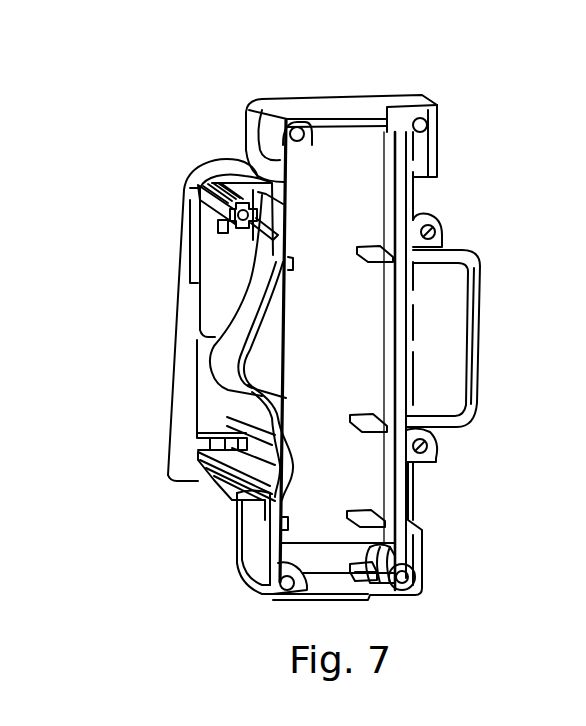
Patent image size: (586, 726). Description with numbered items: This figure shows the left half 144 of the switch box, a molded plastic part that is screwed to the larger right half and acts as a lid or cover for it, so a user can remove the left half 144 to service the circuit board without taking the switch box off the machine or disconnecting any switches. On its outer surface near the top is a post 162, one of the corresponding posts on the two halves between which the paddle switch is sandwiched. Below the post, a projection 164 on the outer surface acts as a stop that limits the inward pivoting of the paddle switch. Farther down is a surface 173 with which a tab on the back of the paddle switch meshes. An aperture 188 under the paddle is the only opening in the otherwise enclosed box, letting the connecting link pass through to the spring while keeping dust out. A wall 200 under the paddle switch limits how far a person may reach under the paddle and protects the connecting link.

The left half 144 is at (342, 110).
The post 162 is at (212, 195).
The projection 164 is at (203, 365).
The aperture 188 is at (262, 417).
The surface 173 is at (214, 462).
The wall 200 is at (233, 498).